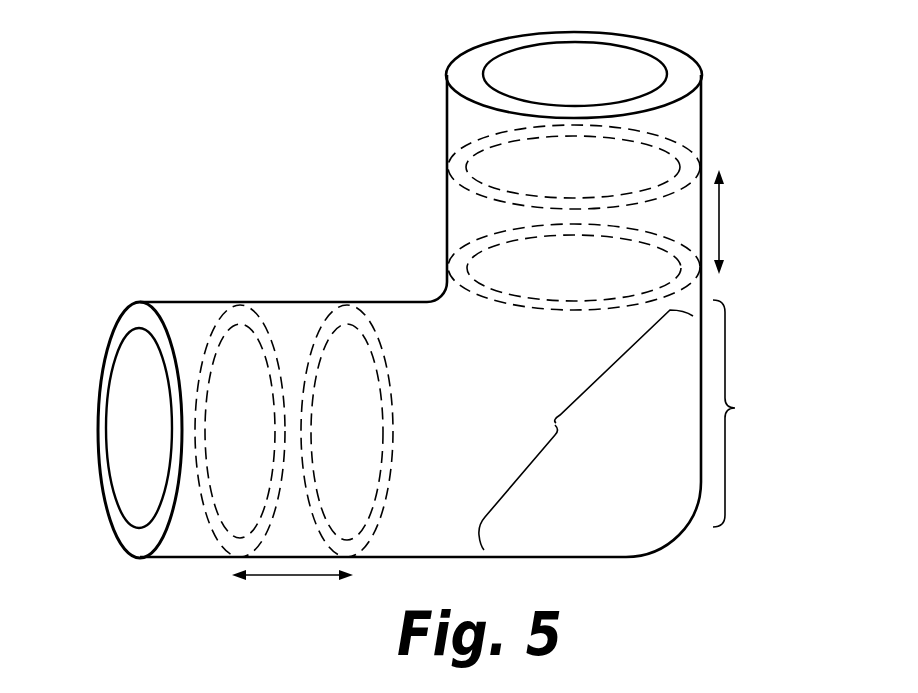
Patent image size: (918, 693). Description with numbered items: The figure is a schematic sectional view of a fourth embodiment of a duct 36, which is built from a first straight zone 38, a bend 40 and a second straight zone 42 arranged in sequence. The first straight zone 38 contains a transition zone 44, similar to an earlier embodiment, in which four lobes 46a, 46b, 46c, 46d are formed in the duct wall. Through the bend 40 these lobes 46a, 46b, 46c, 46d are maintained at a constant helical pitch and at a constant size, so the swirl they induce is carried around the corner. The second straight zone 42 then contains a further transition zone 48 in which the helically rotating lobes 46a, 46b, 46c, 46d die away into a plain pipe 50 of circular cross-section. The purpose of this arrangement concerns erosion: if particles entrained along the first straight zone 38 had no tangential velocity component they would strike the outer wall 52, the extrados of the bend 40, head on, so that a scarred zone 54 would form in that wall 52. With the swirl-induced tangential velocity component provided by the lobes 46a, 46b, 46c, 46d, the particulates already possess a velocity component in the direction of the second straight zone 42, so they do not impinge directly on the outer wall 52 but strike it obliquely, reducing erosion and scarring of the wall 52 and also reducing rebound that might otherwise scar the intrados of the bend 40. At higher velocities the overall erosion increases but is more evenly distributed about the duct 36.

The duct 36 is at (292, 224).
The first straight zone 38 is at (197, 302).
The bend 40 is at (618, 485).
The second straight zone 42 is at (695, 137).
The transition zone 44 is at (293, 545).
The lobe 46a is at (240, 317).
The lobe 46b is at (558, 298).
The lobe 46c is at (243, 528).
The lobe 46d is at (580, 135).
The transition zone 48 is at (725, 222).
The plain pipe 50 is at (500, 72).
The outer wall 52 is at (586, 430).
The scarred zone 54 is at (745, 413).